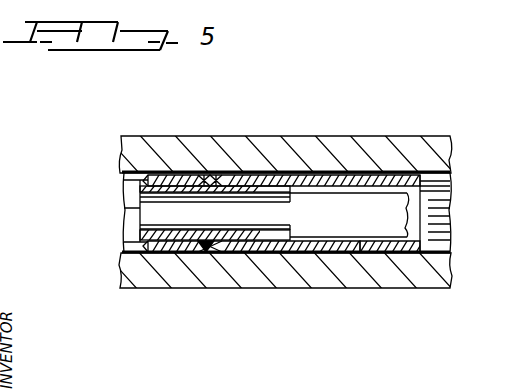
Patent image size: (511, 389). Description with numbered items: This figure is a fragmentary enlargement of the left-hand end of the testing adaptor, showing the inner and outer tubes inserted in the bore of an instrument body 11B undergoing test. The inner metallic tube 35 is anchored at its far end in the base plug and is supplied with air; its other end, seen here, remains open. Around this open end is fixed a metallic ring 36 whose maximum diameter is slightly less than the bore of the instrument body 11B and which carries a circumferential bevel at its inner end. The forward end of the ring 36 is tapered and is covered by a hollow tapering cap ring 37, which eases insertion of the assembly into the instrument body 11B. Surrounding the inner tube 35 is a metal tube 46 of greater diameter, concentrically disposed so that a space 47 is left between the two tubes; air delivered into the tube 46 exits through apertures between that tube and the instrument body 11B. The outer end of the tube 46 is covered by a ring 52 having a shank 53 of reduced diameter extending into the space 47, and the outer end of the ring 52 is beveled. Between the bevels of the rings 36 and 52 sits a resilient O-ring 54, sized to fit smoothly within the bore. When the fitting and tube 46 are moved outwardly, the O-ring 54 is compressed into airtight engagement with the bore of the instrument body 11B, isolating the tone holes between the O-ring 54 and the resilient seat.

The instrument body 11B is at (313, 155).
The metallic tube 35 is at (360, 200).
The metallic ring 36 is at (196, 243).
The cap ring 37 is at (152, 240).
The metal tube 46 is at (330, 243).
The space 47 is at (388, 243).
The ring 52 is at (217, 175).
The shank 53 is at (247, 178).
The O-ring 54 is at (199, 173).